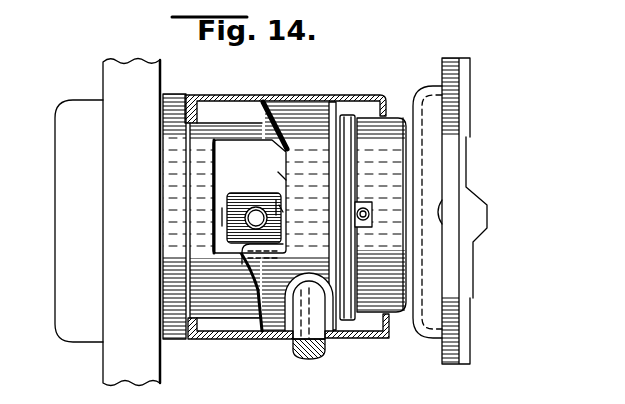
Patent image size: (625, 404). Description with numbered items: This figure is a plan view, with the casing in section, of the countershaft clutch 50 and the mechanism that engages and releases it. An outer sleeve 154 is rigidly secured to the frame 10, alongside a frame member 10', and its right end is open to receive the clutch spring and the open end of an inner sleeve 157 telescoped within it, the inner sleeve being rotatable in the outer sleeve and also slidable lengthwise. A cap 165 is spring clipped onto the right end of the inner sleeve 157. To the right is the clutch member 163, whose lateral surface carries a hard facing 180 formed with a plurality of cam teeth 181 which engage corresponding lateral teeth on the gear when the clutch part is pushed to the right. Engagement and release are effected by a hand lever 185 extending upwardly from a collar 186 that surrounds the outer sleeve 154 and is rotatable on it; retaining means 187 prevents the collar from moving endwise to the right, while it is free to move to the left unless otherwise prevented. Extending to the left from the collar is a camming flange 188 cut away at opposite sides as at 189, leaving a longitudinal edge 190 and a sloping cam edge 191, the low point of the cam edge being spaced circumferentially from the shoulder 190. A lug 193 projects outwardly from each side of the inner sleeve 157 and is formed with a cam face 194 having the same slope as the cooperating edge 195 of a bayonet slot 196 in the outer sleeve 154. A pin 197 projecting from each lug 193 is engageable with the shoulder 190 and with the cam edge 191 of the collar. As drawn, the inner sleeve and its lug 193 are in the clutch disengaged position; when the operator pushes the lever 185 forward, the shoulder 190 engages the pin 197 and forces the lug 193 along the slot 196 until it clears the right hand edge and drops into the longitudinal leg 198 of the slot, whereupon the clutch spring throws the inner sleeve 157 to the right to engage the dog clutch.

The frame 10 is at (93, 213).
The door frame member 10' is at (76, 244).
The clutch 50 is at (370, 81).
The outer sleeve 154 is at (197, 128).
The inner sleeve 157 is at (257, 150).
The clutch member 163 is at (423, 107).
The cap 165 is at (395, 277).
The hard facing 180 is at (468, 128).
The cam teeth 181 is at (483, 205).
The hand lever 185 is at (307, 352).
The collar 186 is at (303, 97).
The retaining means 187 is at (342, 97).
The camming flange 188 is at (260, 324).
The cut-away portion 189 is at (283, 176).
The longitudinal edge 190 is at (273, 246).
The sloping cam edge 191 is at (283, 120).
The lug 193 is at (240, 200).
The cam face 194 is at (277, 207).
The cooperating edge 195 is at (280, 208).
The bayonet slot 196 is at (214, 208).
The pin 197 is at (258, 218).
The longitudinal leg 198 is at (343, 147).